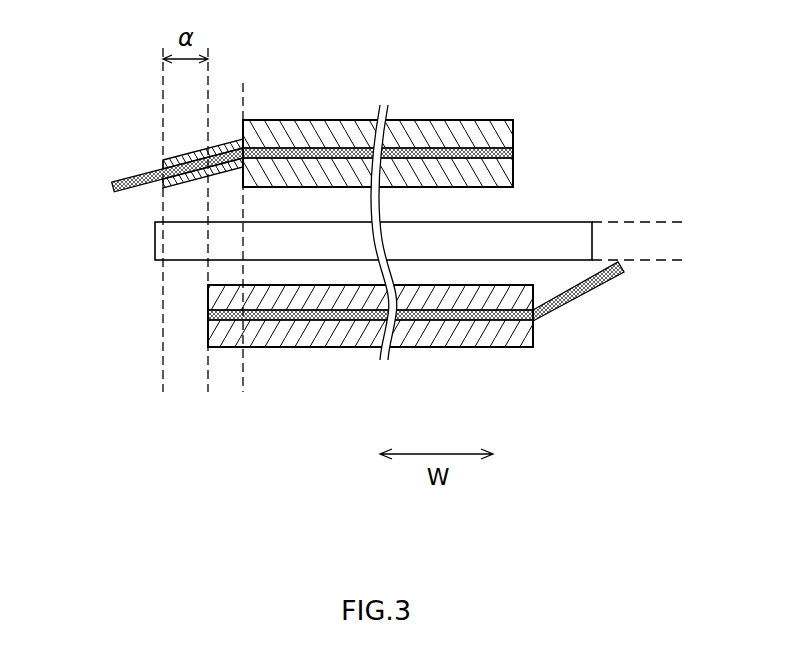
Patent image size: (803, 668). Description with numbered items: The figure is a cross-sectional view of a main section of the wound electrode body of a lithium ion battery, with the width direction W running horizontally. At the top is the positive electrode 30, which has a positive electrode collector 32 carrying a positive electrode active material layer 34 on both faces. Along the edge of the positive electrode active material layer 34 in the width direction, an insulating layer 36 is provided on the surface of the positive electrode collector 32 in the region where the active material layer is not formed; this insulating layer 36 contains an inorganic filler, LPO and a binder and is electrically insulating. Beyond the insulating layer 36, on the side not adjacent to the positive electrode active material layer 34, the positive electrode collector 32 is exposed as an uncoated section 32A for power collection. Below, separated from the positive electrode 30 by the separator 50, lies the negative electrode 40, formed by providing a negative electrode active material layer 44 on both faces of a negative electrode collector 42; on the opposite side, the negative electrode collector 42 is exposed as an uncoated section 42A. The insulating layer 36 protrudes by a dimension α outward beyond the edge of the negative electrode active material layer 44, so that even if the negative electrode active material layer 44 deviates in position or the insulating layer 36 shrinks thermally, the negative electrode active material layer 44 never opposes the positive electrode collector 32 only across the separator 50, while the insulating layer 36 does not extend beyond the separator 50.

The positive electrode 30 is at (535, 98).
The positive electrode collector 32 is at (513, 153).
The uncoated section 32A is at (128, 178).
The positive electrode active material layer 34 is at (513, 172).
The insulating layer 36 is at (199, 184).
The negative electrode 40 is at (555, 365).
The negative electrode collector 42 is at (370, 315).
The uncoated section 42A is at (595, 289).
The negative electrode active material layer 44 is at (215, 338).
The separator 50 is at (155, 240).